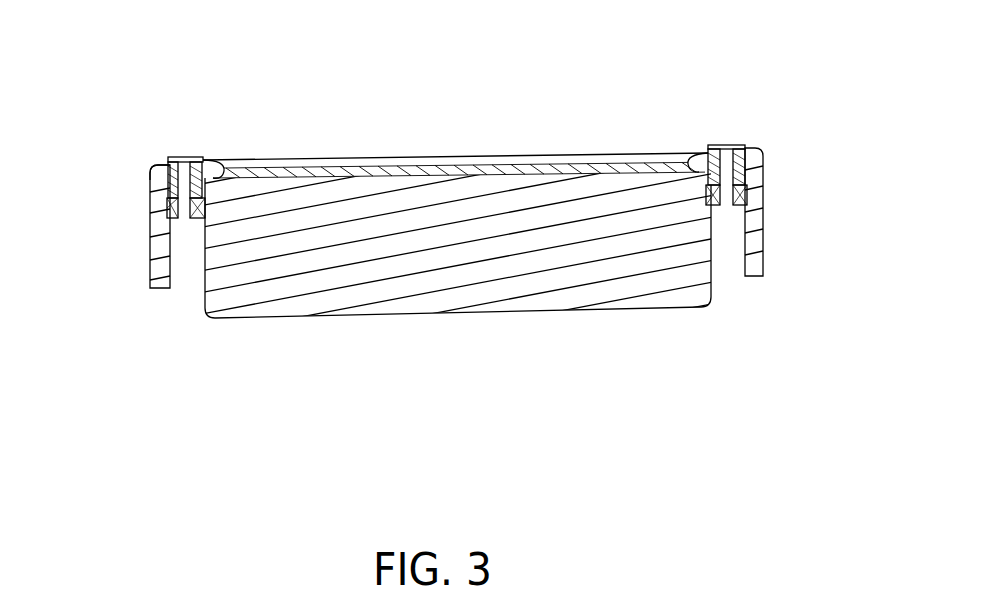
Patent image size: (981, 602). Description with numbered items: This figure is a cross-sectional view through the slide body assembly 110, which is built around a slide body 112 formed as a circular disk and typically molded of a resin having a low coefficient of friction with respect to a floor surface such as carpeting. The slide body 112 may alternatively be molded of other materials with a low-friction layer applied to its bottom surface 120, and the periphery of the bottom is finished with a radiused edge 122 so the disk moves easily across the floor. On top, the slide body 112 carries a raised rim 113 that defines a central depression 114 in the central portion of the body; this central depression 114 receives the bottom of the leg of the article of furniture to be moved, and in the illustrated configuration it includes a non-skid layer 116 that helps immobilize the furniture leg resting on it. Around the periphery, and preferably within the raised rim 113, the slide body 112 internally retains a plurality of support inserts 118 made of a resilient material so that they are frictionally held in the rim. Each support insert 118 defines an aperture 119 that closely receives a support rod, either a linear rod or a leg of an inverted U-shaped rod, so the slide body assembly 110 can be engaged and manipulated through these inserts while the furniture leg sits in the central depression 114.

The slide body assembly 110 is at (772, 214).
The slide body 112 is at (150, 265).
The raised rim 113 is at (152, 167).
The central depression 114 is at (534, 127).
The non-skid layer 116 is at (325, 167).
The support insert 118 is at (186, 222).
The aperture 119 is at (184, 168).
The bottom surface 120 is at (363, 317).
The radiused edge 122 is at (205, 312).